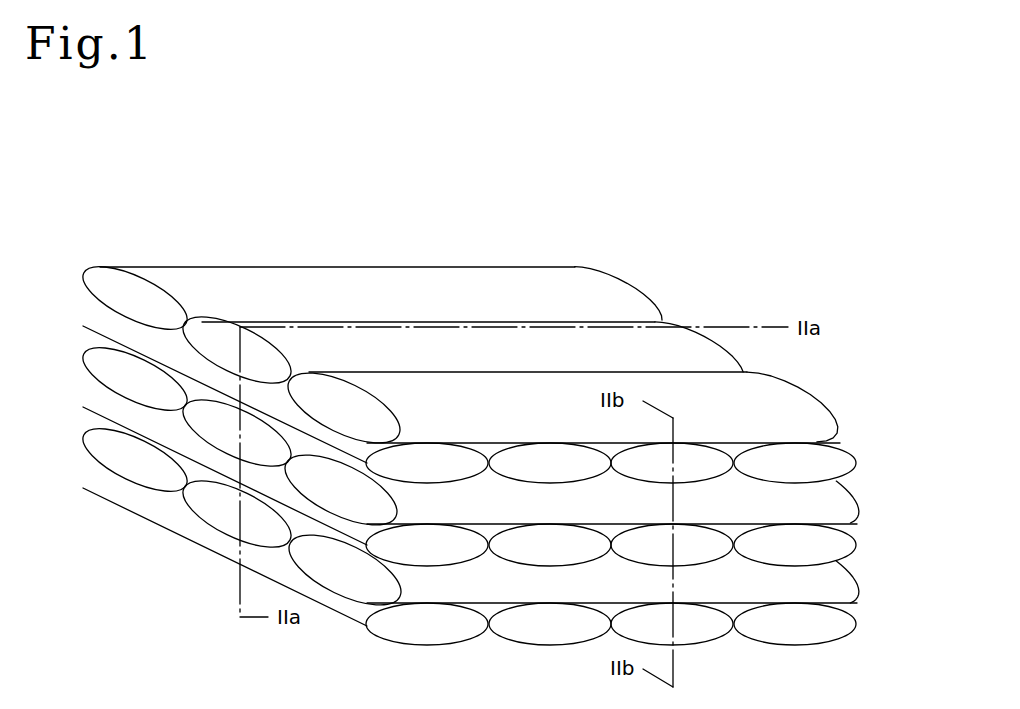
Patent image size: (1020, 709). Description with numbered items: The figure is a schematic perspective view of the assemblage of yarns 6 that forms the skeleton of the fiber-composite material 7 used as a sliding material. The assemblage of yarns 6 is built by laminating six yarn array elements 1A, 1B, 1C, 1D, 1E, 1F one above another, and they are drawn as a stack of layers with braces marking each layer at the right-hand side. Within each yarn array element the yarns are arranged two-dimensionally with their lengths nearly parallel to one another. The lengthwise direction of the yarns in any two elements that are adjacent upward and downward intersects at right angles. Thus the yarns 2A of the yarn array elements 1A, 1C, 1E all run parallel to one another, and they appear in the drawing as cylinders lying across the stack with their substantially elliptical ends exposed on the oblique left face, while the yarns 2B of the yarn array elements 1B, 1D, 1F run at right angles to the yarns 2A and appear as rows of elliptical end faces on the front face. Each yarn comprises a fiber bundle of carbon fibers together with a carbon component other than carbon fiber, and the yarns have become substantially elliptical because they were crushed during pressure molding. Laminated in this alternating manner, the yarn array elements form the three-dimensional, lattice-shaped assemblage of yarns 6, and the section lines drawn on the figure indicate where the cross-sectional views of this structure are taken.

The yarn array element 1A is at (863, 403).
The yarn array element 1B is at (863, 443).
The yarn array element 1C is at (863, 483).
The yarn array element 1D is at (863, 523).
The yarn array element 1E is at (863, 563).
The yarn array element 1F is at (863, 602).
The yarn 2A is at (411, 342).
The yarn 2B is at (188, 365).
The assemblage of yarns 6 is at (704, 311).
The fiber-composite material 7 is at (840, 391).